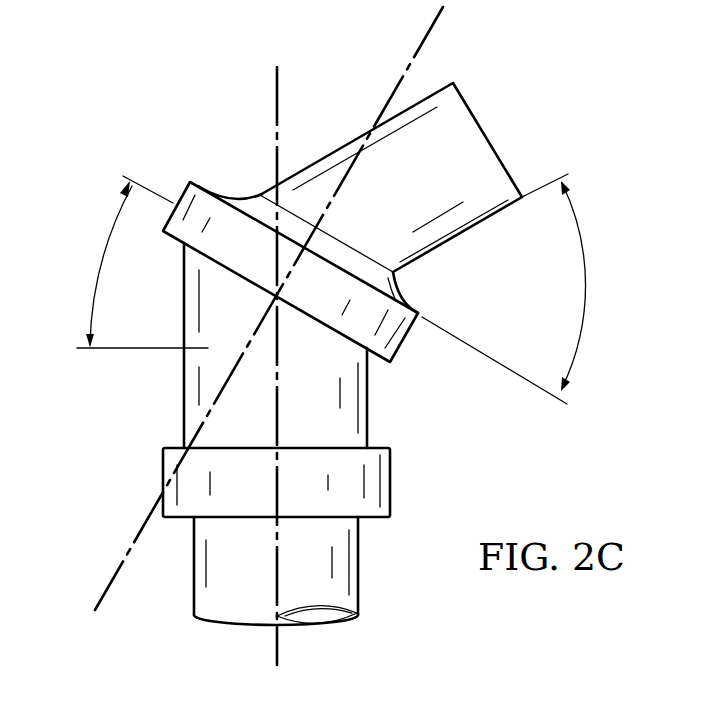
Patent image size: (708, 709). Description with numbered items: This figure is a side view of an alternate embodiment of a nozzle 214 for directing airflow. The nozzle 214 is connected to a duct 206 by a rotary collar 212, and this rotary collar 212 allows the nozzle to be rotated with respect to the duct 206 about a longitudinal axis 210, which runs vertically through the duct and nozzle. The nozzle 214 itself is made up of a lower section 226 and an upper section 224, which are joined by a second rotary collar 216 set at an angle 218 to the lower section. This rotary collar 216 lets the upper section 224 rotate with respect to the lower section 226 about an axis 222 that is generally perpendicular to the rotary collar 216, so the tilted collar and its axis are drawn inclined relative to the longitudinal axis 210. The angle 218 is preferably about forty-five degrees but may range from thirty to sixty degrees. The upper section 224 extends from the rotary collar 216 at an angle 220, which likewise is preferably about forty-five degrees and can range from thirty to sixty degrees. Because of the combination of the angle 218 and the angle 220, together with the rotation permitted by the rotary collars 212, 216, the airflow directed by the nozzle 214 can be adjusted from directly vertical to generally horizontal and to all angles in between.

The duct 206 is at (358, 563).
The longitudinal axis 210 is at (275, 95).
The rotary collar 212 is at (392, 483).
The nozzle 214 is at (467, 118).
The rotary collar 216 is at (398, 349).
The angle 218 is at (100, 260).
The angle 220 is at (586, 288).
The axis 222 is at (398, 82).
The upper section 224 is at (458, 236).
The lower section 226 is at (183, 398).